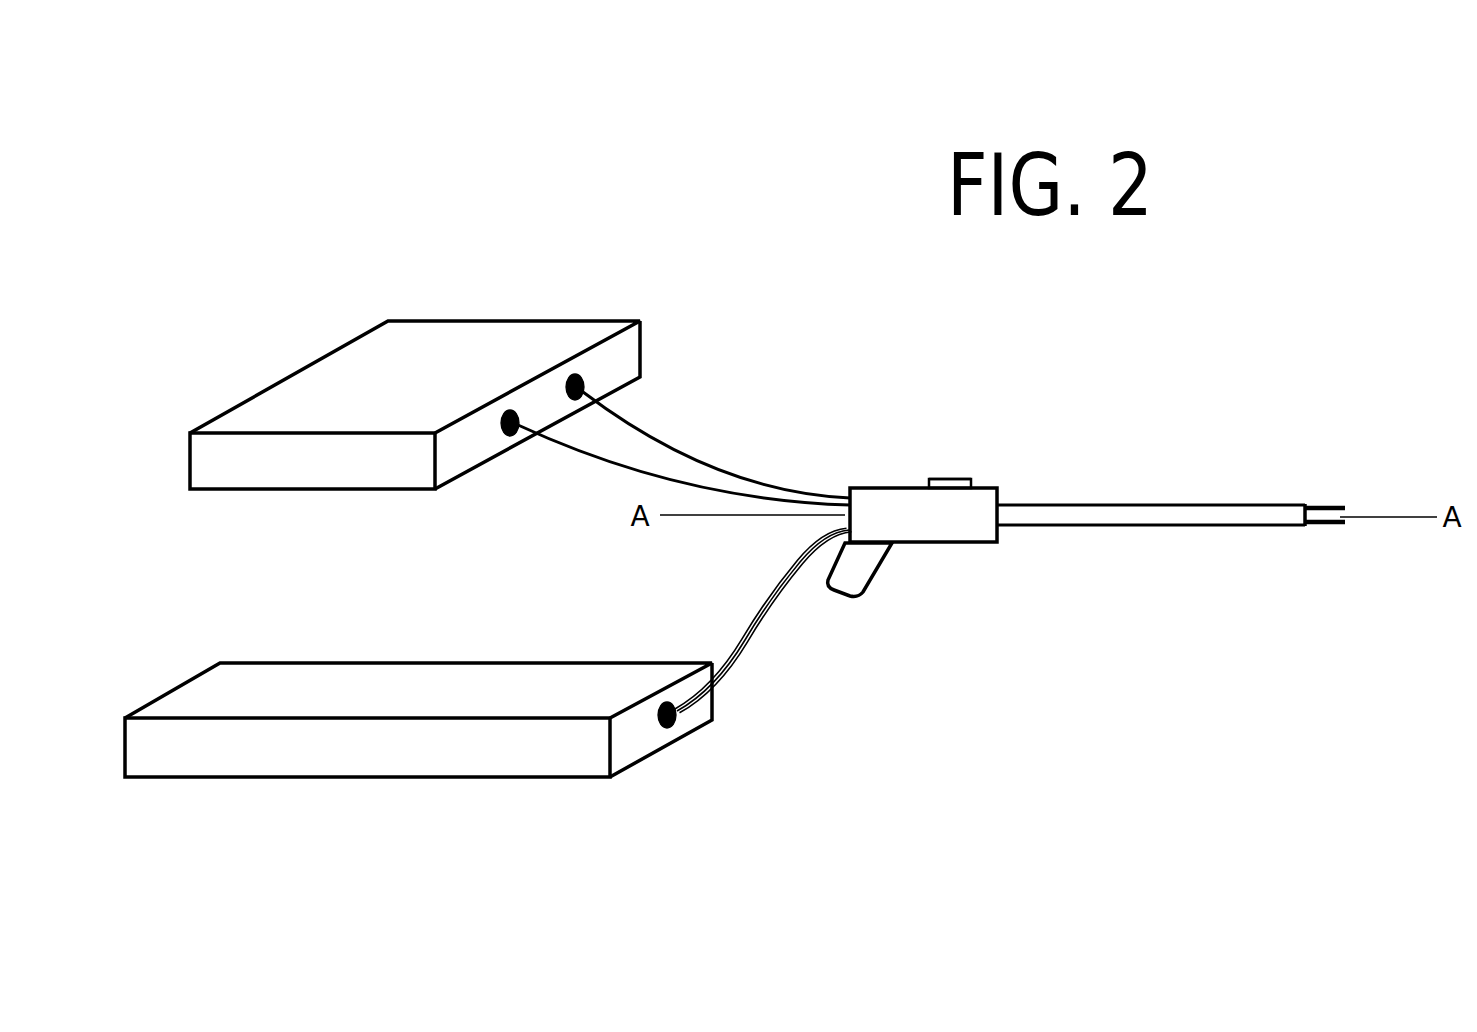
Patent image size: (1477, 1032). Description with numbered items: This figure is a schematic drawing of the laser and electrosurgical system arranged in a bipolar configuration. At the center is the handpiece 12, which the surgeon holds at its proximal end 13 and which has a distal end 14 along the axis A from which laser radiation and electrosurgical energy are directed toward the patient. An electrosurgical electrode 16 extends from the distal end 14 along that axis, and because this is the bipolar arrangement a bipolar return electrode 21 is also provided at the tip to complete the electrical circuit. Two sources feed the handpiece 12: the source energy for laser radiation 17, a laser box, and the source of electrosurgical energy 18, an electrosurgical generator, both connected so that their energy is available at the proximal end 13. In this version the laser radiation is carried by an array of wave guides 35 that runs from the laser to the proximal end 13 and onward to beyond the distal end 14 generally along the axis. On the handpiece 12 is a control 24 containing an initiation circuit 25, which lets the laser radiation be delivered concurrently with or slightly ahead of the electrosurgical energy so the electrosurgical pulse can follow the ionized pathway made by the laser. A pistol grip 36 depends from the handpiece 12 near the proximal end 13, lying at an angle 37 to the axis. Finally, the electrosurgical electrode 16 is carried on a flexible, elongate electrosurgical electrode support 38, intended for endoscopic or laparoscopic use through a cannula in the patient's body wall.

The handpiece 12 is at (982, 487).
The proximal end 13 is at (850, 485).
The distal end 14 is at (1310, 505).
The electrosurgical electrode 16 is at (1317, 508).
The source energy for laser radiation 17 is at (445, 662).
The source of electrosurgical energy 18 is at (522, 321).
The bipolar return electrode 21 is at (1322, 527).
The control 24 is at (948, 479).
The initiation circuit 25 is at (965, 480).
The array of wave guides 35 is at (725, 679).
The pistol grip 36 is at (846, 598).
The angle 37 is at (886, 569).
The electrosurgical electrode support 38 is at (1122, 527).